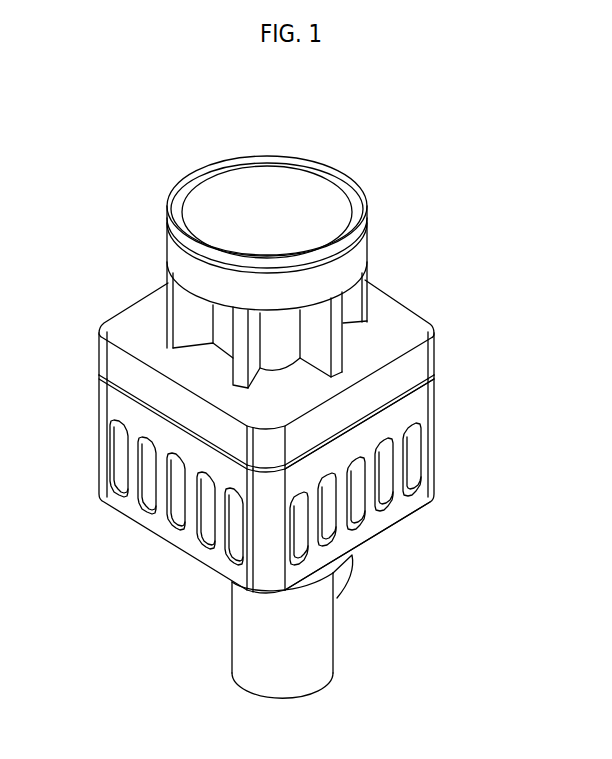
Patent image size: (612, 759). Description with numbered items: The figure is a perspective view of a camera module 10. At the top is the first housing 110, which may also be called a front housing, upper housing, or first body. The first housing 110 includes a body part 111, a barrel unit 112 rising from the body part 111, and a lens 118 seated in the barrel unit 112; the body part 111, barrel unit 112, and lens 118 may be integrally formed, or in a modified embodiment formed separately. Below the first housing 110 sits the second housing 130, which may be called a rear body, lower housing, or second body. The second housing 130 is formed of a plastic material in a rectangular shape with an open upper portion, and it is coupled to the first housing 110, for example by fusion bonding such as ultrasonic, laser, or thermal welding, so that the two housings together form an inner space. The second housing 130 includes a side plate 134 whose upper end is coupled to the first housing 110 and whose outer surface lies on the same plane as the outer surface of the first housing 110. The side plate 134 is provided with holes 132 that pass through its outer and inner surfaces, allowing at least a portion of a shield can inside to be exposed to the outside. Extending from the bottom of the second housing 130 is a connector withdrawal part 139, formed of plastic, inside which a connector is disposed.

The camera module 10 is at (67, 97).
The first housing 110 is at (334, 350).
The body part 111 is at (403, 317).
The barrel unit 112 is at (309, 237).
The lens 118 is at (300, 197).
The second housing 130 is at (338, 482).
The hole 132 is at (413, 438).
The side plate 134 is at (363, 437).
The connector withdrawal part 139 is at (320, 645).